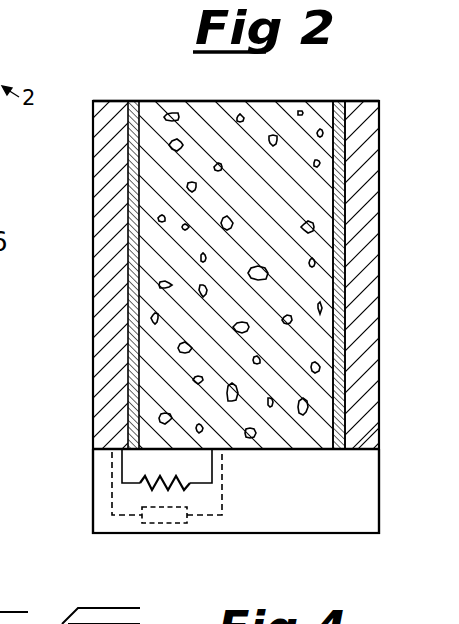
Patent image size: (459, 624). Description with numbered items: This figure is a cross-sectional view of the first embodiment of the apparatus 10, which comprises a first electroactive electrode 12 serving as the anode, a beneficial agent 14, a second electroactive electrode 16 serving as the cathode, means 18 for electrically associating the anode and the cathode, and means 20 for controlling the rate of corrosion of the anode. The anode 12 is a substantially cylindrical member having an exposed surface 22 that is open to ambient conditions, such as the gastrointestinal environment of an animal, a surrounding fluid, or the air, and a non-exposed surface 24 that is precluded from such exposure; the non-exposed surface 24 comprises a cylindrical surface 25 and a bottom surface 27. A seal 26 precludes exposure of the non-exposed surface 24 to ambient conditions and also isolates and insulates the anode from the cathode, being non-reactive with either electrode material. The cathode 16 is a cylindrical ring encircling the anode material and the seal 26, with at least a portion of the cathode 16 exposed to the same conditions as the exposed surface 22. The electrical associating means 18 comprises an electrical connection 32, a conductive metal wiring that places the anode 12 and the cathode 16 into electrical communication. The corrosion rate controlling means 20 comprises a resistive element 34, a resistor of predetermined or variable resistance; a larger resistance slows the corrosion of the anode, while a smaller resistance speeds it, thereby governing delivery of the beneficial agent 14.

The apparatus 10 is at (167, 81).
The first electroactive electrode 12 is at (202, 99).
The beneficial agent 14 is at (275, 134).
The second electroactive electrode 16 is at (381, 288).
The means for electrically associating the anode and the cathode 18 is at (103, 487).
The means for controlling the rate of corrosion of the anode 20 is at (200, 498).
The exposed surface 22 is at (303, 100).
The non-exposed surface 24 is at (339, 208).
The cylindrical surface 25 is at (338, 145).
The seal 26 is at (136, 100).
The bottom surface 27 is at (303, 452).
The electrical connection 32 is at (120, 470).
The resistive element 34 is at (192, 480).